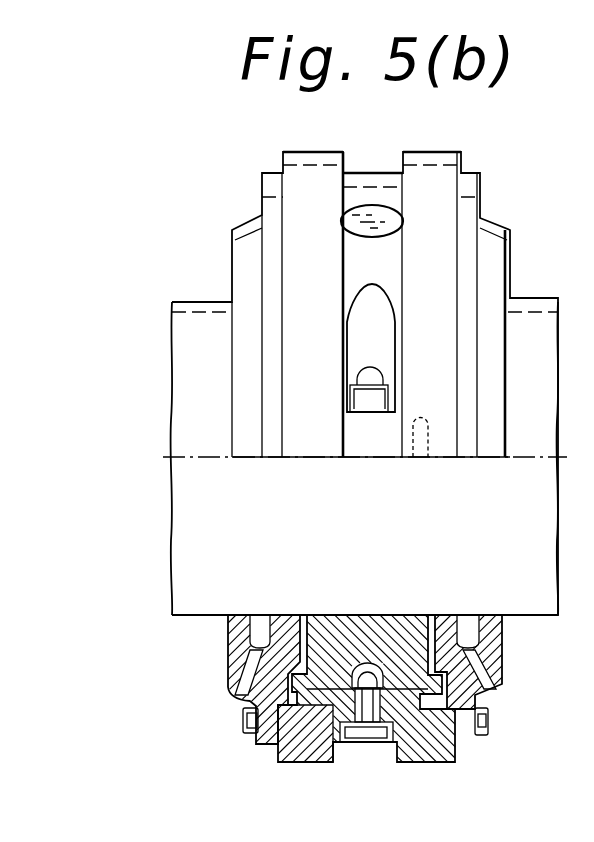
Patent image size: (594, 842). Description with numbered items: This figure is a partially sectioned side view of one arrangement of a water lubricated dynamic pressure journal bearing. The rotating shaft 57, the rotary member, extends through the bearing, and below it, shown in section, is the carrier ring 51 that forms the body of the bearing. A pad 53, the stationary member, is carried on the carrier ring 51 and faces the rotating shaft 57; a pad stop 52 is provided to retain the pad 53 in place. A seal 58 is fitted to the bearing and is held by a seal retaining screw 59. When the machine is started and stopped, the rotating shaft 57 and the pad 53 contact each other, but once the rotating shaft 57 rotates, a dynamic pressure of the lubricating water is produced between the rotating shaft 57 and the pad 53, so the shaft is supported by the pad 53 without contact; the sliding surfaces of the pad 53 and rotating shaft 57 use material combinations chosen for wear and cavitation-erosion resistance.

The carrier ring 51 is at (280, 754).
The pad stop 52 is at (262, 697).
The pad 53 is at (305, 650).
The rotating shaft 57 is at (187, 576).
The seal 58 is at (503, 653).
The seal retaining screw 59 is at (487, 728).